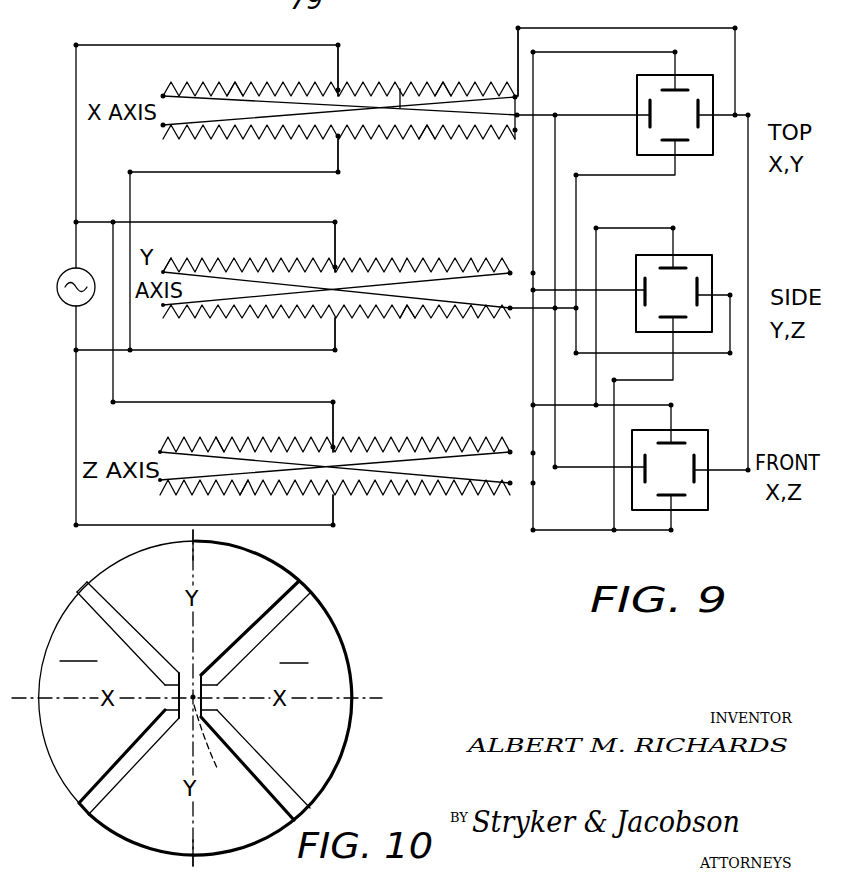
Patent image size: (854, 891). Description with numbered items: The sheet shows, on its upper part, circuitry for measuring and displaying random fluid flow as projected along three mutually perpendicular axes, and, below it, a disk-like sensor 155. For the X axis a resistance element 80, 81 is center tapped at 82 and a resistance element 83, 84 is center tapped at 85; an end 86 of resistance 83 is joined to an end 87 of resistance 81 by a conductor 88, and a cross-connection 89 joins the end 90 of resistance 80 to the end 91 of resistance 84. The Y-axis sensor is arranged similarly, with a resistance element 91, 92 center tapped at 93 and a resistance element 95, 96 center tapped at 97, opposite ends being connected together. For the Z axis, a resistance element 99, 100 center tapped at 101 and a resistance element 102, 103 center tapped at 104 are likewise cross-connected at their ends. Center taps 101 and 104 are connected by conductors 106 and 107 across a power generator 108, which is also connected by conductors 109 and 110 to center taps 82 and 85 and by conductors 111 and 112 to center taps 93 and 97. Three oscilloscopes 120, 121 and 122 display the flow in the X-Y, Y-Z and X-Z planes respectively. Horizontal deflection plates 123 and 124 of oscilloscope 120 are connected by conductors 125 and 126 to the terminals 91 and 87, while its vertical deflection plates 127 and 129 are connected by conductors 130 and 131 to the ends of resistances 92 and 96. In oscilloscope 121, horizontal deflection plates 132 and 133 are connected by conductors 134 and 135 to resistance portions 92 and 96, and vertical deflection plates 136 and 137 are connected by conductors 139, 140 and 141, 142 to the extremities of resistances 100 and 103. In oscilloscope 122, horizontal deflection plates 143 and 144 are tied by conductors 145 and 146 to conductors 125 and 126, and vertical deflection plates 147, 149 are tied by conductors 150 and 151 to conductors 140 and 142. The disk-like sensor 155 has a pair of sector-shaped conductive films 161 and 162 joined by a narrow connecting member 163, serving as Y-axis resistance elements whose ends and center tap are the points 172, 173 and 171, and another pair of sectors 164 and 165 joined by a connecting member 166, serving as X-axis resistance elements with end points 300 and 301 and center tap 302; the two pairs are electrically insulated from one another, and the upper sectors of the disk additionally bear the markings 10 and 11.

In FIG. 9, the X-axis resistance element portion 80 is at (246, 84).
In FIG. 9, the X-axis resistance element portion 81 is at (443, 83).
In FIG. 9, the center tap 82 is at (338, 88).
In FIG. 9, the X-axis resistance element portion 83 is at (227, 137).
In FIG. 9, the X-axis resistance element portion 84 is at (431, 140).
In FIG. 9, the center tap 85 is at (338, 136).
In FIG. 9, the end of resistance 86 is at (163, 126).
In FIG. 9, the end terminal of resistance 87 is at (514, 95).
In FIG. 9, the conductor 88 is at (406, 78).
In FIG. 9, the cross-connection 89 is at (235, 82).
In FIG. 9, the end of resistance 90 is at (163, 92).
In FIG. 9, the end terminal of resistance 91 is at (516, 132).
In FIG. 9, the Y-axis resistance element portion 92 is at (405, 262).
In FIG. 9, the center tap 93 is at (340, 262).
In FIG. 9, the Y-axis resistance element portion 95 is at (276, 313).
In FIG. 9, the Y-axis resistance element portion 96 is at (410, 320).
In FIG. 9, the center tap 97 is at (338, 318).
In FIG. 9, the Z-axis resistance element portion 99 is at (222, 442).
In FIG. 9, the Z-axis resistance element portion 100 is at (417, 444).
In FIG. 9, the center tap 101 is at (337, 444).
In FIG. 9, the Z-axis resistance element portion 102 is at (243, 490).
In FIG. 9, the Z-axis resistance element portion 103 is at (447, 495).
In FIG. 9, the center tap 104 is at (335, 492).
In FIG. 9, the conductor 106 is at (192, 392).
In FIG. 9, the conductor 107 is at (168, 525).
In FIG. 9, the power generator 108 is at (69, 305).
In FIG. 9, the conductor 109 is at (76, 122).
In FIG. 9, the conductor 110 is at (153, 180).
In FIG. 9, the conductor 111 is at (296, 221).
In FIG. 9, the conductor 112 is at (218, 360).
In FIG. 9, the oscilloscope 120 is at (720, 82).
In FIG. 9, the oscilloscope 121 is at (718, 252).
In FIG. 9, the oscilloscope 122 is at (718, 432).
In FIG. 9, the horizontal deflection plate 123 is at (648, 119).
In FIG. 9, the horizontal deflection plate 124 is at (702, 104).
In FIG. 9, the conductor 125 is at (610, 112).
In FIG. 9, the conductor 126 is at (631, 30).
In FIG. 9, the vertical deflection plate 127 is at (684, 86).
In FIG. 9, the vertical deflection plate 129 is at (684, 142).
In FIG. 9, the conductor 130 is at (573, 55).
In FIG. 9, the conductor 131 is at (626, 183).
In FIG. 9, the horizontal deflection plate 132 is at (640, 299).
In FIG. 9, the horizontal deflection plate 133 is at (702, 288).
In FIG. 9, the conductor 134 is at (612, 289).
In FIG. 9, the conductor 135 is at (576, 339).
In FIG. 9, the vertical deflection plate 136 is at (684, 266).
In FIG. 9, the vertical deflection plate 137 is at (680, 323).
In FIG. 9, the conductor 139 is at (645, 228).
In FIG. 9, the conductor 140 is at (537, 402).
In FIG. 9, the conductor 141 is at (613, 513).
In FIG. 9, the conductor 142 is at (531, 534).
In FIG. 9, the horizontal deflection plate 143 is at (640, 476).
In FIG. 9, the horizontal deflection plate 144 is at (695, 475).
In FIG. 9, the conductor 145 is at (586, 465).
In FIG. 9, the conductor 146 is at (749, 357).
In FIG. 9, the vertical deflection plate 147 is at (693, 418).
In FIG. 9, the vertical deflection plate 149 is at (678, 500).
In FIG. 9, the conductor 150 is at (622, 410).
In FIG. 9, the conductor 151 is at (631, 535).
In FIG. 10, the quadrant plate 10 is at (117, 672).
In FIG. 10, the quadrant plate 11 is at (220, 698).
In FIG. 10, the disk-like sensor 155 is at (70, 622).
In FIG. 10, the sector-shaped conductive film 161 is at (123, 590).
In FIG. 10, the sector-shaped conductive film 162 is at (130, 840).
In FIG. 10, the narrow connecting member 163 is at (178, 705).
In FIG. 10, the sector-shaped conductive element 164 is at (77, 767).
In FIG. 10, the sector-shaped conductive element 165 is at (313, 767).
In FIG. 10, the narrow connecting member 166 is at (210, 708).
In FIG. 10, the center tap point 171 is at (194, 695).
In FIG. 10, the end point 172 is at (193, 548).
In FIG. 10, the end point 173 is at (197, 845).
In FIG. 10, the end point 300 is at (45, 698).
In FIG. 10, the end point 301 is at (355, 695).
In FIG. 10, the center tap 302 is at (223, 750).